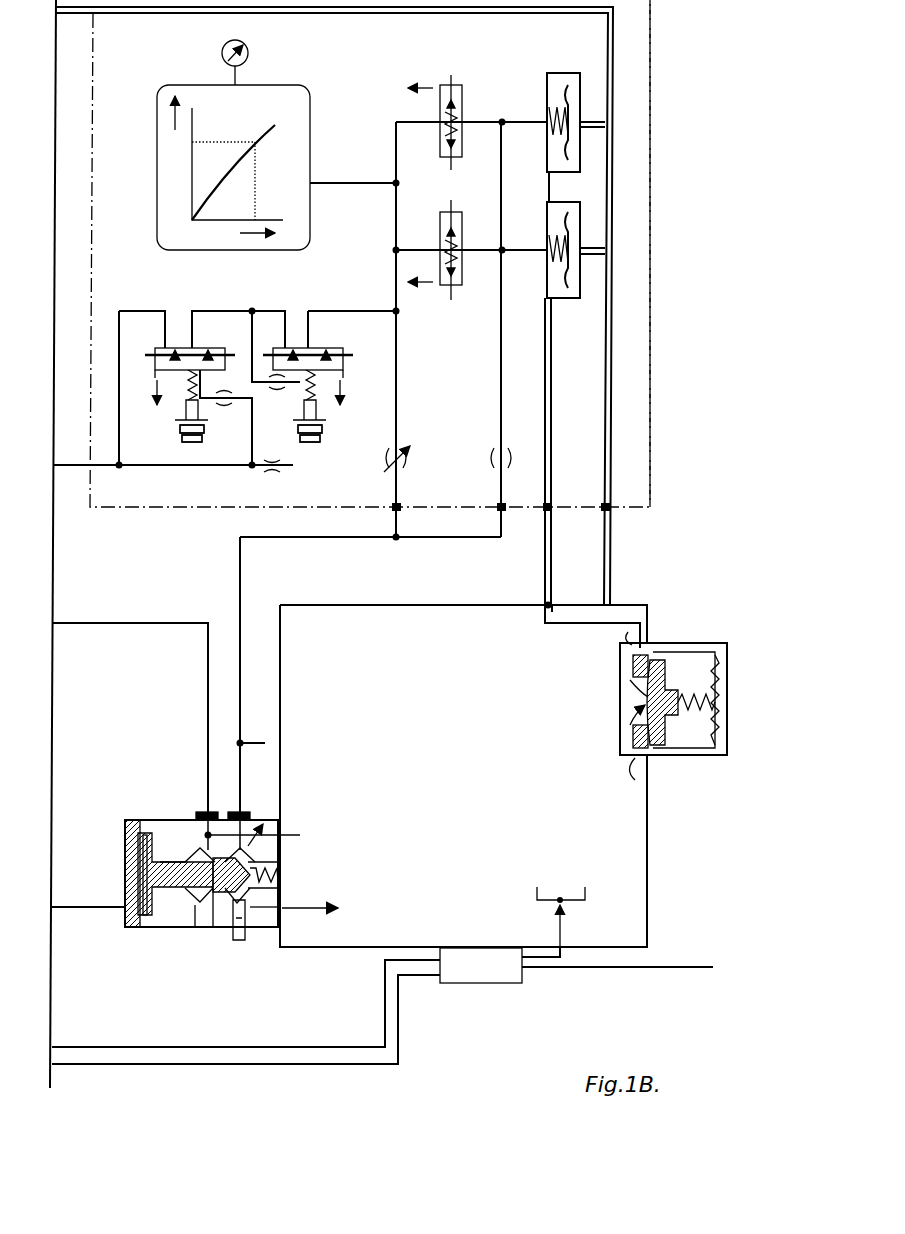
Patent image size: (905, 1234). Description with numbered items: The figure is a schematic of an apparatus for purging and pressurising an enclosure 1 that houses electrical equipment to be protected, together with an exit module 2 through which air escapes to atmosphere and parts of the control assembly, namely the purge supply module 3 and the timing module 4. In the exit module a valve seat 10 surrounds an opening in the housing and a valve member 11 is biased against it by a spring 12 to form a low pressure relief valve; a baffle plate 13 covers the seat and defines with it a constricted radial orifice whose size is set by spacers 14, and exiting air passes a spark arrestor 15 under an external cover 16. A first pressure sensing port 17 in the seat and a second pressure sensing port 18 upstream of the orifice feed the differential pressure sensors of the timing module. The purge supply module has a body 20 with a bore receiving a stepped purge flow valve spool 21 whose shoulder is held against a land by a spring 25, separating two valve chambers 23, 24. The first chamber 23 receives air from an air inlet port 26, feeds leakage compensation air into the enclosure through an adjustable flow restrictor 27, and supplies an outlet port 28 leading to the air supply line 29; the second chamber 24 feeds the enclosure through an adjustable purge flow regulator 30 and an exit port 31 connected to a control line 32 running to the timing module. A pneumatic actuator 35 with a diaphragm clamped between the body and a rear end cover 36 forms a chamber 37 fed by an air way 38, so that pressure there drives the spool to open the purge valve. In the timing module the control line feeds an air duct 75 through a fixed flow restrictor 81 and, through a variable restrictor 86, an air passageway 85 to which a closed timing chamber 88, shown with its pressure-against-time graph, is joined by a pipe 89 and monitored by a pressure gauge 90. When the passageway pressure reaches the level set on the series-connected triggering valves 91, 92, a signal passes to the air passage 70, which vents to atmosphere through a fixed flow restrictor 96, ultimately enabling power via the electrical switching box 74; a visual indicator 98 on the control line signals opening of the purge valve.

The enclosure 1 is at (650, 866).
The exit module 2 is at (663, 780).
The purge supply module 3 is at (205, 865).
The timing module 4 is at (652, 368).
The valve seat 10 is at (633, 738).
The valve member 11 is at (662, 662).
The spring 12 is at (695, 695).
The baffle plate 13 is at (620, 688).
The spacers 14 is at (630, 668).
The spark arrestor 15 is at (720, 690).
The external cover 16 is at (705, 757).
The first pressure sensing port 17 is at (640, 700).
The second pressure sensing port 18 is at (605, 608).
The body 20 is at (157, 918).
The purge flow valve spool 21 is at (135, 865).
The first valve chamber 23 is at (205, 888).
The second valve chamber 24 is at (250, 855).
The spring 25 is at (270, 876).
The air inlet port 26 is at (212, 930).
The adjustable flow restrictor 27 is at (268, 832).
The outlet port 28 is at (207, 808).
The air supply line 29 is at (82, 620).
The adjustable purge flow regulator 30 is at (248, 925).
The exit port 31 is at (245, 812).
The control line 32 is at (240, 572).
The pneumatic actuator 35 is at (130, 822).
The rear end cover 36 is at (125, 840).
The chamber 37 is at (138, 888).
The air way 38 is at (73, 912).
The air passage 70 is at (65, 468).
The electrical switching box 74 is at (480, 985).
The air duct 75 is at (500, 405).
The fixed flow restrictor 81 is at (510, 462).
The air passageway 85 is at (398, 372).
The variable restrictor 86 is at (402, 463).
The closed timing chamber 88 is at (312, 135).
The pipe 89 is at (352, 186).
The pressure gauge 90 is at (243, 46).
The triggering valve 91 is at (330, 348).
The triggering valve 92 is at (208, 348).
The fixed flow restrictor 96 is at (270, 474).
The visual indicator 98 is at (252, 740).